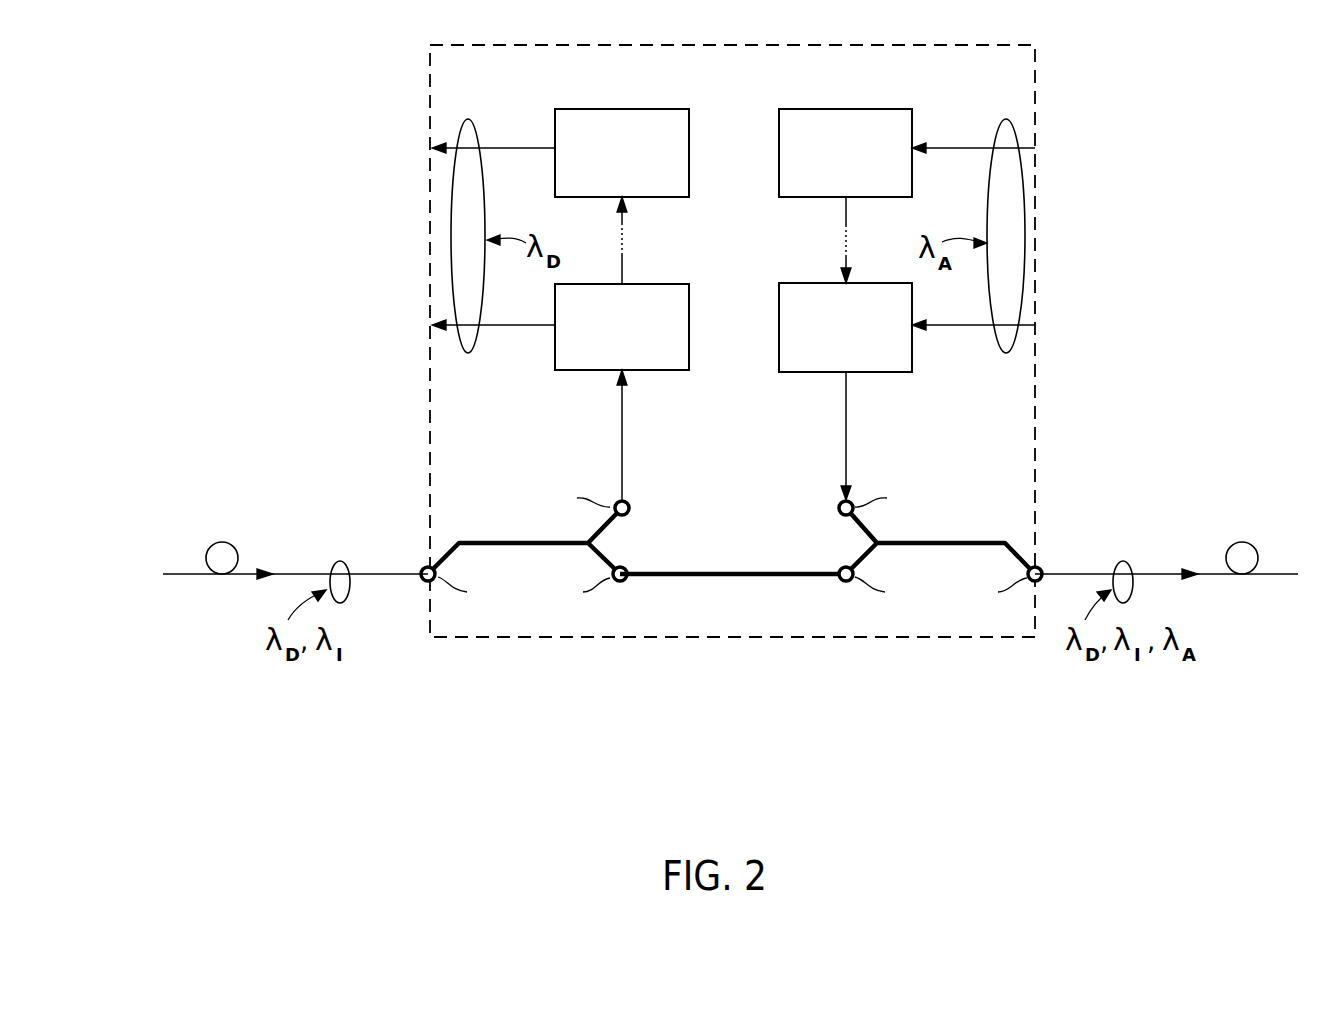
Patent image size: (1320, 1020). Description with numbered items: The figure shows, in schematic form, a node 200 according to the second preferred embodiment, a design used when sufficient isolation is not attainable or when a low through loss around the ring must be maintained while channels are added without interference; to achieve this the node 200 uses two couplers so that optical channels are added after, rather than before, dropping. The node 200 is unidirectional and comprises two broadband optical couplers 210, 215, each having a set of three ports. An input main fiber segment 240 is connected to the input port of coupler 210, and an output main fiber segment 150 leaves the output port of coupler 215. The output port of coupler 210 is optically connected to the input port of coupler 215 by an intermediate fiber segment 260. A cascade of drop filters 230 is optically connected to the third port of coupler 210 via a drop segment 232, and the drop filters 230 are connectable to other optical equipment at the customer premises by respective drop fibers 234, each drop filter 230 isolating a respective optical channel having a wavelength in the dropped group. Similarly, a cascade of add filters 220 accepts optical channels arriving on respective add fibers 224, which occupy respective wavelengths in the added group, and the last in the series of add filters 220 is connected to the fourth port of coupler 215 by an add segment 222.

The node 200 is at (984, 84).
The drop filters 230 is at (603, 182).
The add filters 220 is at (827, 182).
The drop fibers 234 is at (529, 150).
The add input path 224 is at (946, 150).
The drop segment 232 is at (620, 432).
The add segment 222 is at (848, 432).
The broadband optical coupler 210 is at (535, 547).
The broadband optical coupler 215 is at (930, 547).
The intermediate fiber segment 260 is at (733, 576).
The input main fiber segment 240 is at (183, 577).
The output optical fiber 150 is at (1275, 578).